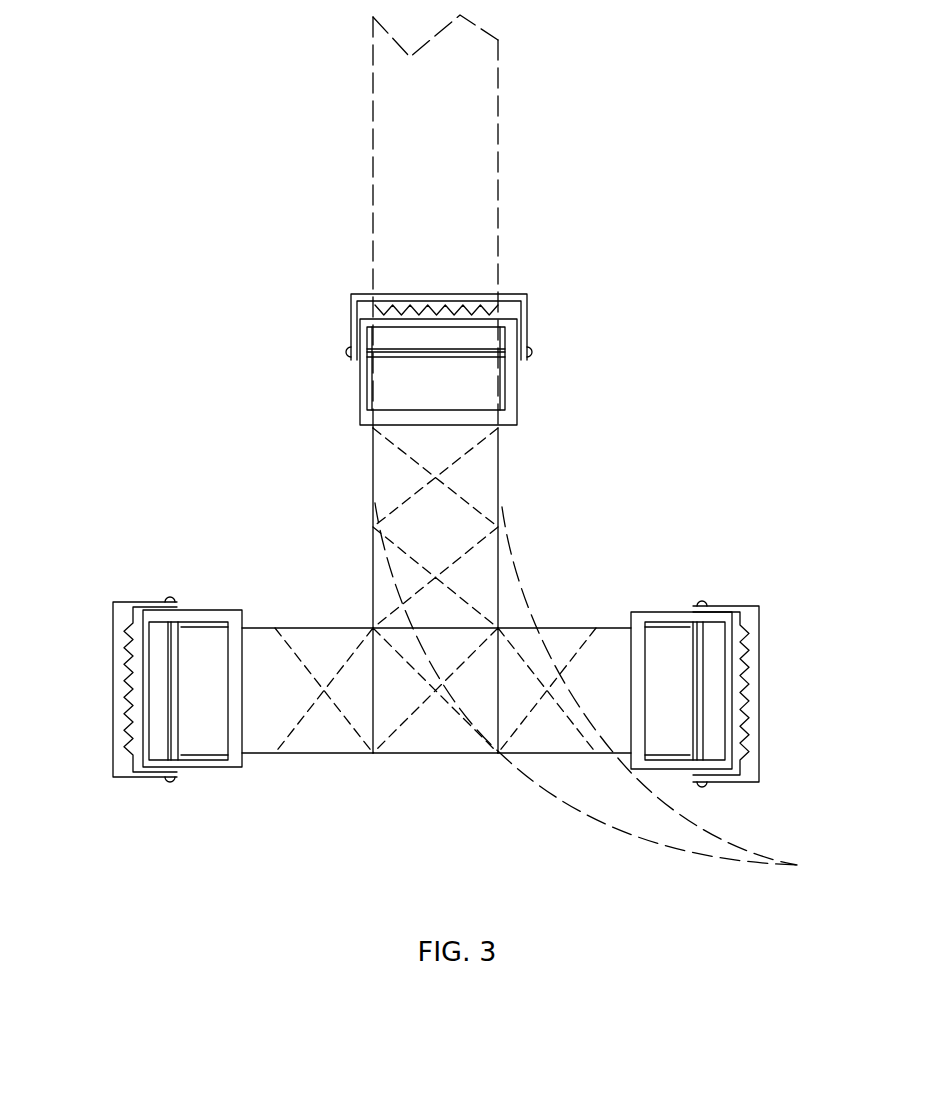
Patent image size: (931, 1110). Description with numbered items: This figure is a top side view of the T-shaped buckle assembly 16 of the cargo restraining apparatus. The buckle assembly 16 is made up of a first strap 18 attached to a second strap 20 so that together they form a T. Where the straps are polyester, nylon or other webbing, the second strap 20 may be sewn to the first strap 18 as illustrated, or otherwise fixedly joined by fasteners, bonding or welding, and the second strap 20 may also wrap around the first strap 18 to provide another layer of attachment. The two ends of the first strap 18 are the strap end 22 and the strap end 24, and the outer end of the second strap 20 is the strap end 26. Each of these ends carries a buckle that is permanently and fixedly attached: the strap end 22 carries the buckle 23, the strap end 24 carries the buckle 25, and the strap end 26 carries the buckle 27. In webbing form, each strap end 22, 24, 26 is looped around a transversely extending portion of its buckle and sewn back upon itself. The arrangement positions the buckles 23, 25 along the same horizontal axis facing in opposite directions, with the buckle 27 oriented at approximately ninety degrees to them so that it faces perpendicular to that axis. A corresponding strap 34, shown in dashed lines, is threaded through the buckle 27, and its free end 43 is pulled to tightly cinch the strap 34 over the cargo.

The T-shaped buckle assembly 16 is at (600, 542).
The first strap 18 is at (327, 735).
The second strap 20 is at (390, 485).
The strap end 22 is at (205, 725).
The buckle 23 is at (113, 759).
The strap end 24 is at (675, 652).
The buckle 25 is at (747, 643).
The strap end 26 is at (467, 397).
The buckle 27 is at (507, 298).
The second strap 34 is at (402, 183).
The free end 43 is at (617, 820).